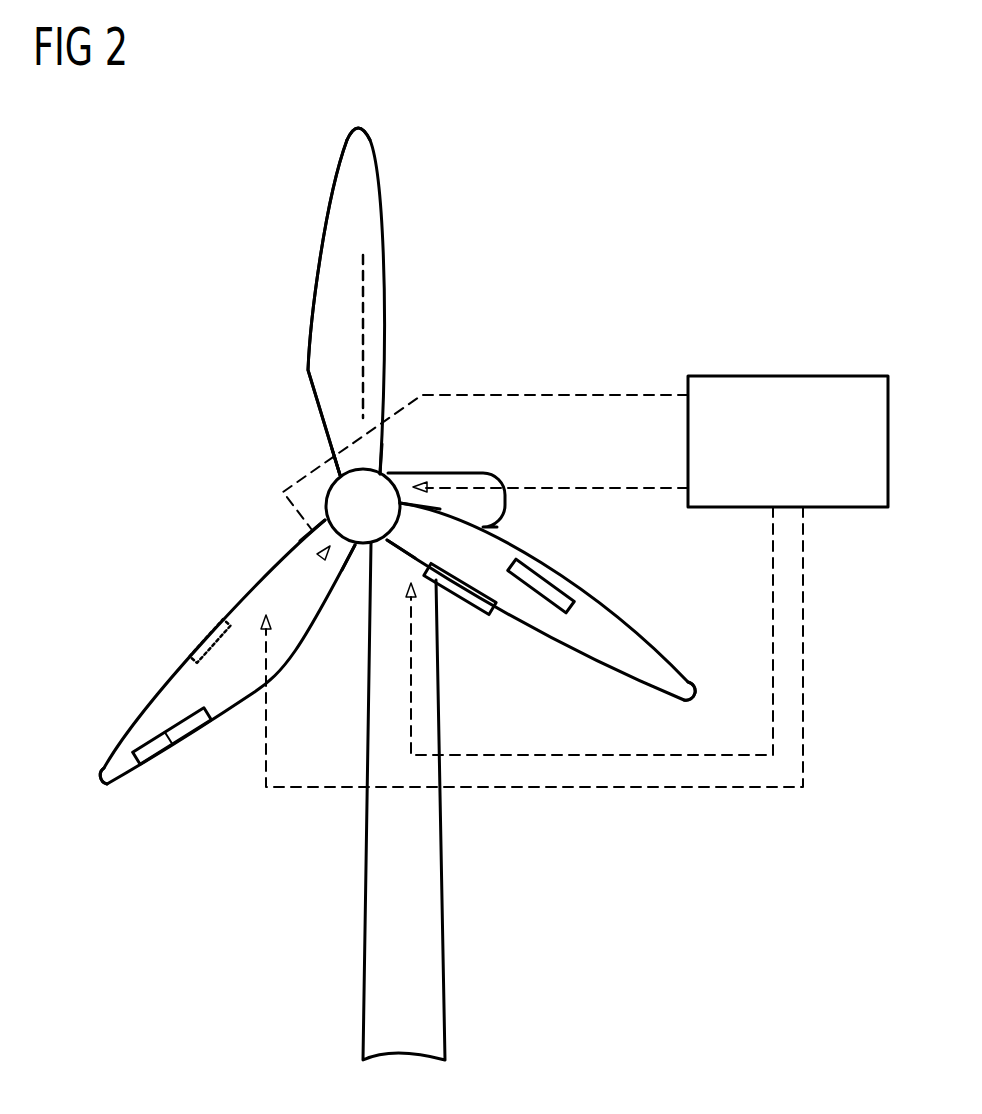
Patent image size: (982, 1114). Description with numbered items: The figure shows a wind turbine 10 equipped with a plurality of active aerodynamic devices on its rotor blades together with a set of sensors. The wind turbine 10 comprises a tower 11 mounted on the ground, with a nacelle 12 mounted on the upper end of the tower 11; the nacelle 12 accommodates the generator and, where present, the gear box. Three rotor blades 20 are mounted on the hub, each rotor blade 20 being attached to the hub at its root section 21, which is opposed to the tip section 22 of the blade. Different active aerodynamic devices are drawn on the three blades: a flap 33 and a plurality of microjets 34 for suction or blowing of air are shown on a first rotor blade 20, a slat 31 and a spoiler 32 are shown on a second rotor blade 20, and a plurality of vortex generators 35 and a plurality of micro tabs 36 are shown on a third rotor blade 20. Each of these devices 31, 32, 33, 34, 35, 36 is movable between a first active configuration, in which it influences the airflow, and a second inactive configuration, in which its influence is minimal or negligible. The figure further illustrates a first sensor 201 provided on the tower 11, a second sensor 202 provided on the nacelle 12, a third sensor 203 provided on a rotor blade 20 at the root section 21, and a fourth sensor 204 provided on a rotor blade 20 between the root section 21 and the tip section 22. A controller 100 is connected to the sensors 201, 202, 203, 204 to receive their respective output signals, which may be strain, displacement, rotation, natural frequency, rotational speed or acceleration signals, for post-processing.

The wind turbine 10 is at (688, 140).
The tower 11 is at (433, 913).
The nacelle 12 is at (470, 473).
The rotor blade 20 is at (383, 207).
The root section 21 is at (358, 460).
The tip section 22 is at (358, 121).
The slat 31 is at (453, 597).
The spoiler 32 is at (558, 586).
The flap 33 is at (153, 752).
The microjets 34 is at (203, 638).
The vortex generators 35 is at (364, 298).
The micro tabs 36 is at (327, 208).
The controller 100 is at (790, 376).
The first sensor 201 is at (407, 597).
The second sensor 202 is at (422, 480).
The third sensor 203 is at (321, 557).
The fourth sensor 204 is at (262, 627).